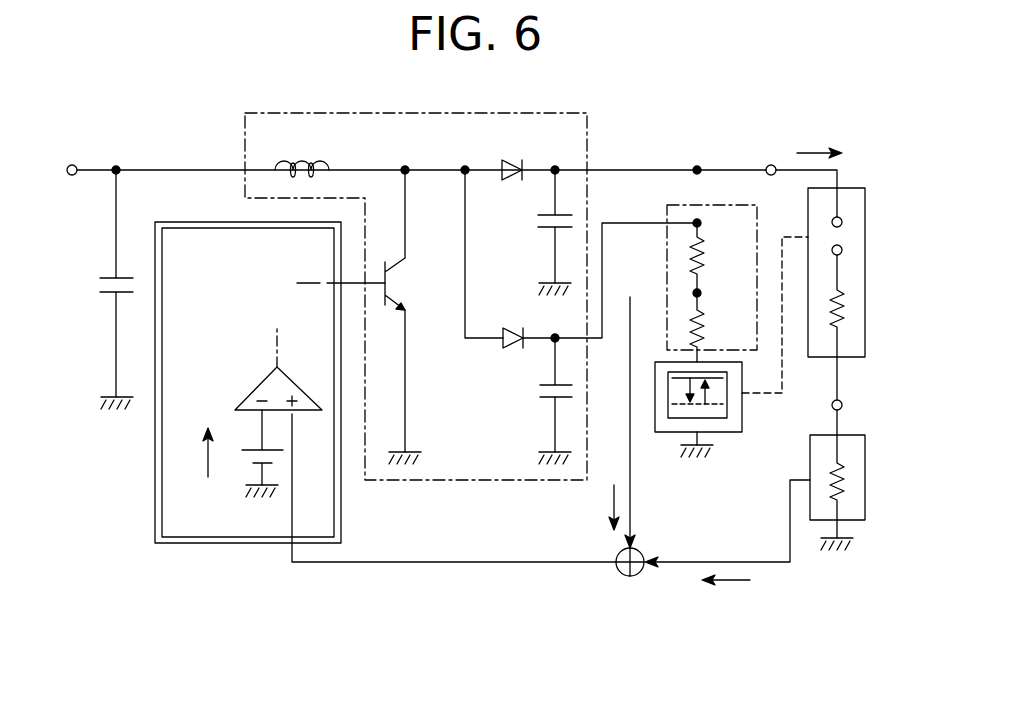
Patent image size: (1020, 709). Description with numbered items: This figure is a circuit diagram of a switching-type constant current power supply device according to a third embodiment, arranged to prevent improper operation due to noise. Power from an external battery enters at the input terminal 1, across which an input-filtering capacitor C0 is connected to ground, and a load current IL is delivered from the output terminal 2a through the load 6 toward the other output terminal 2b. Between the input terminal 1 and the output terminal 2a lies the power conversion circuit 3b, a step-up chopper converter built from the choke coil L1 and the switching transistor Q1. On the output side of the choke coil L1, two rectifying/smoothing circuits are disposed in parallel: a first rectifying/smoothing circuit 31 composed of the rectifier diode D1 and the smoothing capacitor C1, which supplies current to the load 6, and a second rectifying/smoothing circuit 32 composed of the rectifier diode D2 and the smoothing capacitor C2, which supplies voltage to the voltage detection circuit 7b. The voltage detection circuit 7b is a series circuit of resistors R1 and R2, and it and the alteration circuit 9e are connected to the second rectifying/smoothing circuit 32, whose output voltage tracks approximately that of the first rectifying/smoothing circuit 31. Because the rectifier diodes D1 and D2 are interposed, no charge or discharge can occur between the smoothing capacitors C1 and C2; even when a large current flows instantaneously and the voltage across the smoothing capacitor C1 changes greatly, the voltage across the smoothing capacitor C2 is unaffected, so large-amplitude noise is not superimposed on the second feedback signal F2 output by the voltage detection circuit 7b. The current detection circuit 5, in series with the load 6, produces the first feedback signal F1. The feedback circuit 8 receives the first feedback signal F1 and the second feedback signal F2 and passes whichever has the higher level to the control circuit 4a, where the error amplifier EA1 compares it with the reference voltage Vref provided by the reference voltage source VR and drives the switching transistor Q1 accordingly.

The input terminal 1 is at (72, 164).
The output terminal 2a is at (771, 165).
The output terminal 2b is at (842, 405).
The power conversion circuit 3b is at (241, 140).
The control circuit 4a is at (195, 544).
The current detection circuit 5 is at (865, 480).
The load 6 is at (865, 216).
The voltage detection circuit 7b is at (679, 204).
The feedback circuit 8 is at (621, 576).
The alteration circuit 9e is at (730, 434).
The first rectifying/smoothing circuit 31 is at (510, 227).
The second rectifying/smoothing circuit 32 is at (493, 387).
The input-filtering capacitor C0 is at (98, 286).
The smoothing capacitor C1 is at (550, 220).
The smoothing capacitor C2 is at (537, 392).
The rectifier diode D1 is at (514, 165).
The rectifier diode D2 is at (509, 325).
The choke coil L1 is at (301, 163).
The switching transistor Q1 is at (400, 280).
The resistor R1 is at (706, 262).
The resistor R2 is at (707, 333).
The error amplifier EA1 is at (253, 392).
The reference voltage source VR is at (244, 463).
The reference voltage Vref is at (207, 467).
The first feedback signal F1 is at (734, 581).
The second feedback signal F2 is at (612, 501).
The load current IL is at (812, 152).